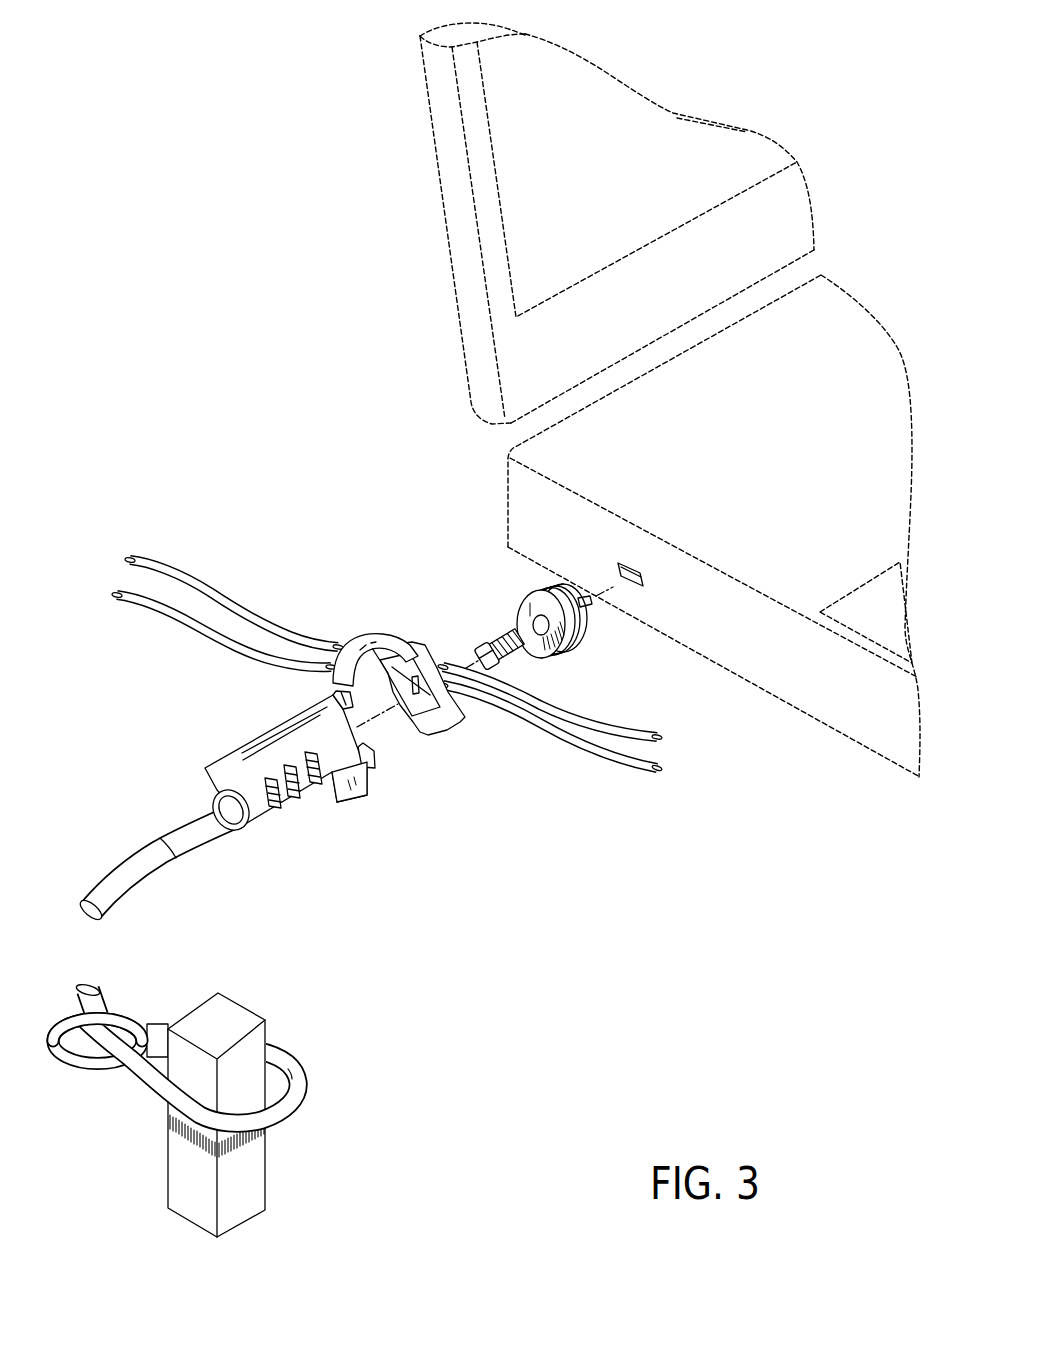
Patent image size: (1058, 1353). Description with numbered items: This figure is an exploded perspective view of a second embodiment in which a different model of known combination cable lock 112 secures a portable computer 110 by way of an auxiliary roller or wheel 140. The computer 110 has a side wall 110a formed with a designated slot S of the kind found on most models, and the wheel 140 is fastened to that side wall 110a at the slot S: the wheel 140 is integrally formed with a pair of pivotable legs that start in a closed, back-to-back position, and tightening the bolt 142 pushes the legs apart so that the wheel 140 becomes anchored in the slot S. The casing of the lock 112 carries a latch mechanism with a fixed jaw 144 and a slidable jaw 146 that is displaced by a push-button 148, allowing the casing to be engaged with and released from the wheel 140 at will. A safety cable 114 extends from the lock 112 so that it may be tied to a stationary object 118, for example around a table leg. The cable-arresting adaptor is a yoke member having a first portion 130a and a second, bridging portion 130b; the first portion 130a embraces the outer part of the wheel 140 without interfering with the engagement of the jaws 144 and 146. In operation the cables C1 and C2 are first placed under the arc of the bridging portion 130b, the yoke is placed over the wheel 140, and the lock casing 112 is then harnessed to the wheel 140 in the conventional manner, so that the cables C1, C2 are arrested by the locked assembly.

The portable computer 110 is at (408, 300).
The side wall 110a is at (857, 708).
The combination cable lock 112 is at (180, 750).
The safety cable 114 is at (130, 860).
The stationary object 118 is at (225, 1012).
The first portion of yoke member 130a is at (465, 720).
The bridging portion of yoke member 130b is at (360, 637).
The wheel 140 is at (520, 594).
The bolt 142 is at (480, 640).
The fixed jaw 144 is at (375, 760).
The slidable jaw 146 is at (317, 683).
The push-button 148 is at (365, 793).
The cable C1 is at (130, 557).
The cable C2 is at (117, 593).
The designated slot S is at (641, 568).